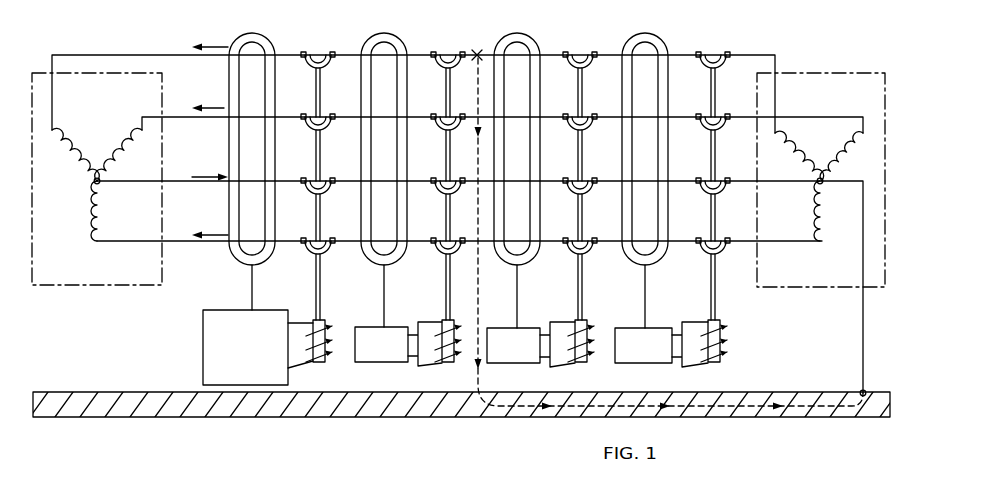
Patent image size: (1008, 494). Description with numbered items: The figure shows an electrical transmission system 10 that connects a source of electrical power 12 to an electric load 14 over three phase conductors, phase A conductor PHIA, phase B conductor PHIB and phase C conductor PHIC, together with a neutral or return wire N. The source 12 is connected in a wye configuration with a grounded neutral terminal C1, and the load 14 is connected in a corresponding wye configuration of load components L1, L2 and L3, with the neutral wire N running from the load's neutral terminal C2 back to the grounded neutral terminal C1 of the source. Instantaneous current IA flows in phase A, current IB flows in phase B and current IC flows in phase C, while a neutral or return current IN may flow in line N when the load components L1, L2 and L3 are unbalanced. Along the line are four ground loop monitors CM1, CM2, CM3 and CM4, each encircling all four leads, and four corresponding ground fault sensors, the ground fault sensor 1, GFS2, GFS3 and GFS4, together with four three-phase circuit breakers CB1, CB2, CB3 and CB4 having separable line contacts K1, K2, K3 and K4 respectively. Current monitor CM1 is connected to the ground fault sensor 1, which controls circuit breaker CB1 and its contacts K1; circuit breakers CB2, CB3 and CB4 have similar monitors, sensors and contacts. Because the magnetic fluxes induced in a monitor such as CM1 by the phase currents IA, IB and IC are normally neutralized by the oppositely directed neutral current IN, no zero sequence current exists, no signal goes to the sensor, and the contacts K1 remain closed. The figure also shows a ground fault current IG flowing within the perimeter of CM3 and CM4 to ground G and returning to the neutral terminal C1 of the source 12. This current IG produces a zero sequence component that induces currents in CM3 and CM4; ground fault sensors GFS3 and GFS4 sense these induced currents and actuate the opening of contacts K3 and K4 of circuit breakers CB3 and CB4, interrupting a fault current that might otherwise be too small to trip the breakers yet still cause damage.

The electrical transmission system 10 is at (470, 30).
The source of electrical power 12 is at (777, 287).
The electric load 14 is at (59, 285).
The ground fault sensor 1 is at (245, 347).
The ground loop monitor CM1 is at (245, 33).
The ground loop monitor CM2 is at (388, 34).
The ground loop monitor CM3 is at (520, 34).
The ground loop monitor CM4 is at (650, 34).
The separable line contacts K1 is at (305, 52).
The separable line contacts K2 is at (435, 52).
The separable line contacts K3 is at (570, 52).
The separable line contacts K4 is at (700, 52).
The circuit breaker CB1 is at (326, 362).
The circuit breaker CB2 is at (458, 373).
The circuit breaker CB3 is at (588, 364).
The circuit breaker CB4 is at (722, 359).
The ground fault sensor GFS2 is at (398, 344).
The ground fault sensor GFS3 is at (531, 344).
The ground fault sensor GFS4 is at (661, 344).
The load component L1 is at (77, 154).
The load component L2 is at (119, 161).
The load component L3 is at (97, 219).
The grounded neutral terminal C1 is at (823, 176).
The neutral terminal C2 is at (94, 181).
The ground G is at (136, 392).
The ground fault current IG is at (744, 406).
The instantaneous current in phase A IA is at (210, 40).
The current in phase B IB is at (209, 101).
The neutral current IN is at (209, 170).
The current in phase C IC is at (210, 228).
The phase A conductor PHIA is at (145, 55).
The phase B conductor PHIB is at (192, 117).
The phase C conductor PHIC is at (193, 236).
The neutral or return wire N is at (185, 181).